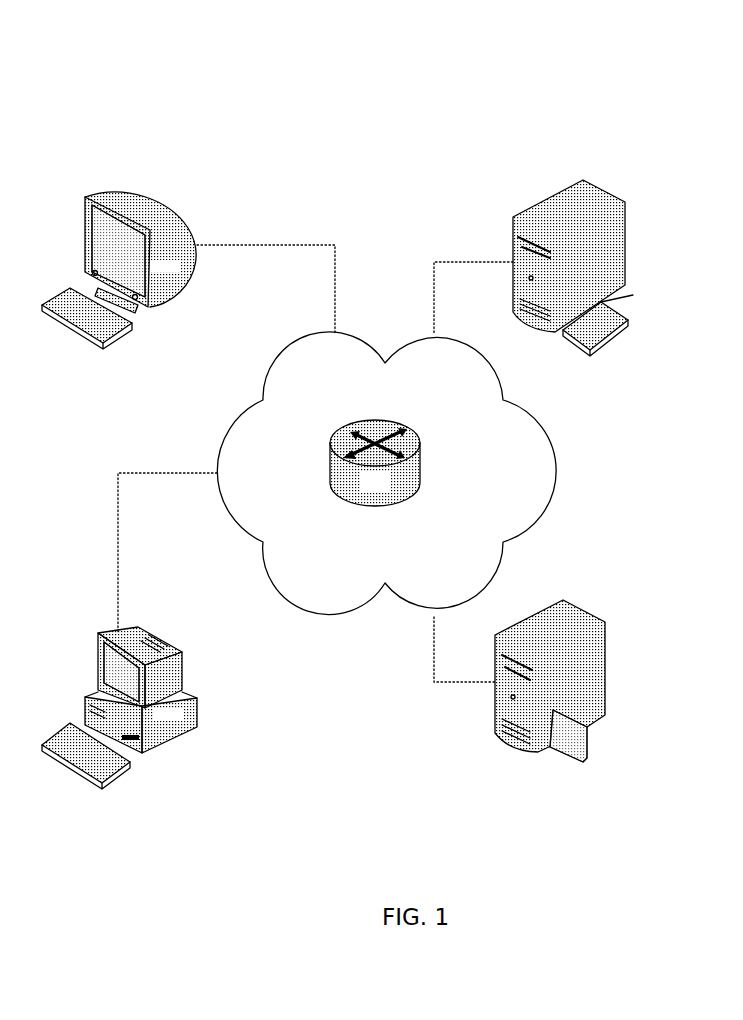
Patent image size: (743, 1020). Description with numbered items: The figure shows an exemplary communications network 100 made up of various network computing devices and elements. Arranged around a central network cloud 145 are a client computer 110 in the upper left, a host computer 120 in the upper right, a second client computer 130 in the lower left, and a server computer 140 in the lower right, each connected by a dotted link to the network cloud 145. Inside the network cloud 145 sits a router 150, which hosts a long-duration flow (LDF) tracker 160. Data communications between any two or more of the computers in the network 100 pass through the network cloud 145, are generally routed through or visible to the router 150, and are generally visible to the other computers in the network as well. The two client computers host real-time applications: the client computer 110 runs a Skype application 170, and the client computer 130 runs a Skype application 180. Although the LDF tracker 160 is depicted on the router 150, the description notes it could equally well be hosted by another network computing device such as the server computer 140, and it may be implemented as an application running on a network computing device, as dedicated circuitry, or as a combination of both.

The communications network 100 is at (400, 40).
The client computer 110 is at (112, 192).
The host computer 120 is at (583, 180).
The client computer 130 is at (170, 648).
The server computer 140 is at (600, 613).
The network cloud 145 is at (553, 448).
The router 150 is at (420, 432).
The long-duration flow (LDF) tracker 160 is at (413, 496).
The Skype application 170 is at (195, 236).
The Skype application 180 is at (198, 713).